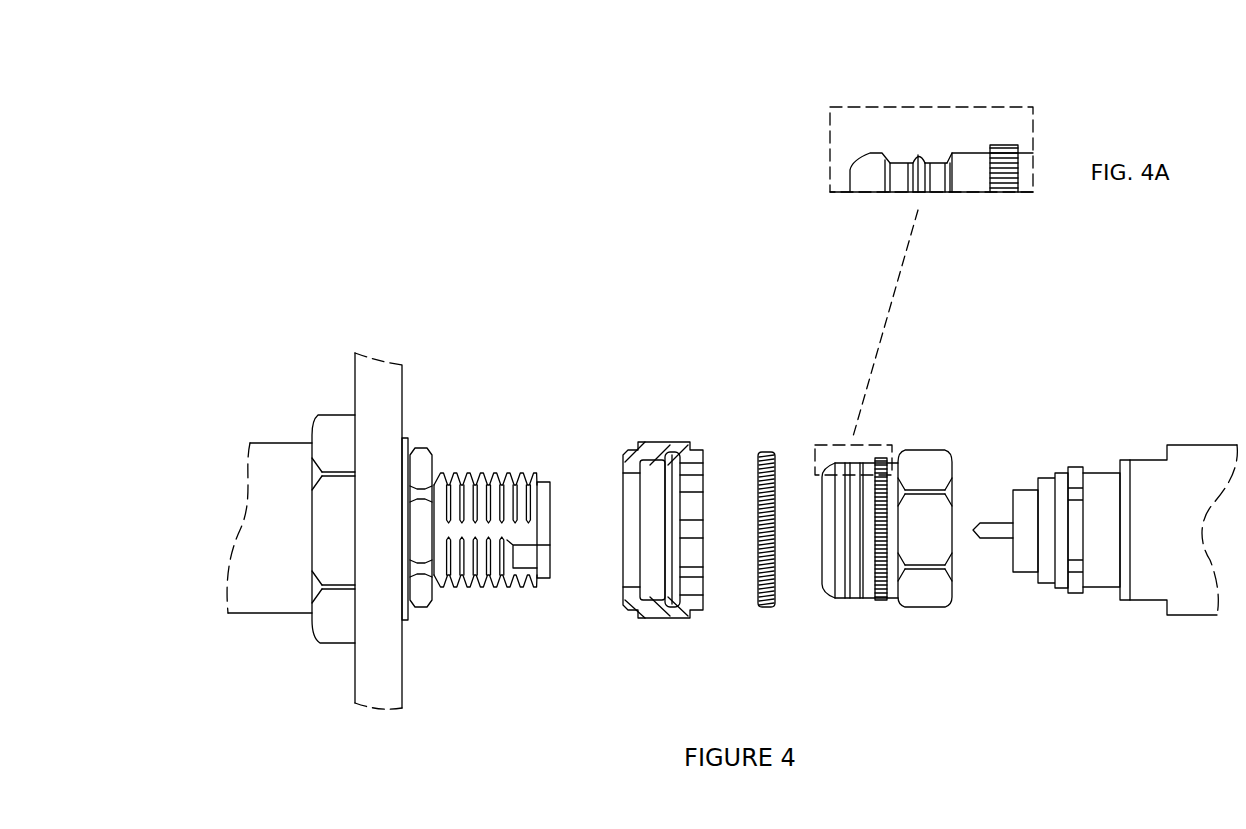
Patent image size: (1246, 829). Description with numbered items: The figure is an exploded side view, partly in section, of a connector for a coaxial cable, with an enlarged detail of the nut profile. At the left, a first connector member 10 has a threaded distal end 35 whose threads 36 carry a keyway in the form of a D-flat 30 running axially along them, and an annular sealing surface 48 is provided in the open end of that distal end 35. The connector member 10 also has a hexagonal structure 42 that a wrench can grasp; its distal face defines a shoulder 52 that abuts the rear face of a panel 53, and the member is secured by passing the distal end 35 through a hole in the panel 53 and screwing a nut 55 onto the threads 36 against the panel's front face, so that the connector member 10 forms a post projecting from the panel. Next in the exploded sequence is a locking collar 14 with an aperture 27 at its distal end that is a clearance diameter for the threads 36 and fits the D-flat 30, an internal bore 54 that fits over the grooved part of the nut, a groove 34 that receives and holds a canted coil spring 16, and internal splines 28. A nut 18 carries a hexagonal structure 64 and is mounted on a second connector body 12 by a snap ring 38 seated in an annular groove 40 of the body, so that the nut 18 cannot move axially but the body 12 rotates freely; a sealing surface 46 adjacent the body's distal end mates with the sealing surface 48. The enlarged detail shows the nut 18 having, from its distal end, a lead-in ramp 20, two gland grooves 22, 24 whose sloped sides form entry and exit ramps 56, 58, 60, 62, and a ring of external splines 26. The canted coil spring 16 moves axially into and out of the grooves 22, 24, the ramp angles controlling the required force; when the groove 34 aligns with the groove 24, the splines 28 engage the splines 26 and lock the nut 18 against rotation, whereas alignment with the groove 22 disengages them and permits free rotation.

In FIG. 4, the connector member 10 is at (541, 481).
In FIG. 4, the second connector body 12 is at (1105, 473).
In FIG. 4, the locking collar 14 is at (658, 442).
In FIG. 4, the canted coil spring 16 is at (765, 452).
In FIG. 4, the nut 18 is at (918, 593).
In FIG. 4A, the nut 18 is at (990, 160).
In FIG. 4A, the lead-in ramp 20 is at (863, 157).
In FIG. 4A, the gland groove 22 is at (898, 162).
In FIG. 4A, the gland groove 24 is at (933, 162).
In FIG. 4A, the external splines 26 is at (1000, 145).
In FIG. 4, the aperture 27 is at (625, 602).
In FIG. 4, the internal splines 28 is at (695, 573).
In FIG. 4, the D-flat 30 is at (490, 580).
In FIG. 4, the groove 34 is at (673, 598).
In FIG. 4, the threaded distal end 35 is at (453, 473).
In FIG. 4, the threads 36 is at (468, 473).
In FIG. 4, the snap ring 38 is at (1078, 465).
In FIG. 4, the annular groove 40 is at (1075, 535).
In FIG. 4, the hexagonal structure 42 is at (337, 430).
In FIG. 4, the sealing surface 46 is at (1013, 562).
In FIG. 4, the annular sealing surface 48 is at (516, 566).
In FIG. 4, the shoulder 52 is at (357, 627).
In FIG. 4, the panel 53 is at (368, 660).
In FIG. 4, the internal bore 54 is at (650, 597).
In FIG. 4, the nut 55 is at (422, 457).
In FIG. 4A, the entry ramp 56 is at (887, 163).
In FIG. 4A, the exit ramp 58 is at (918, 160).
In FIG. 4A, the entry ramp 60 is at (927, 163).
In FIG. 4A, the exit ramp 62 is at (952, 167).
In FIG. 4, the hexagonal structure 64 is at (935, 513).